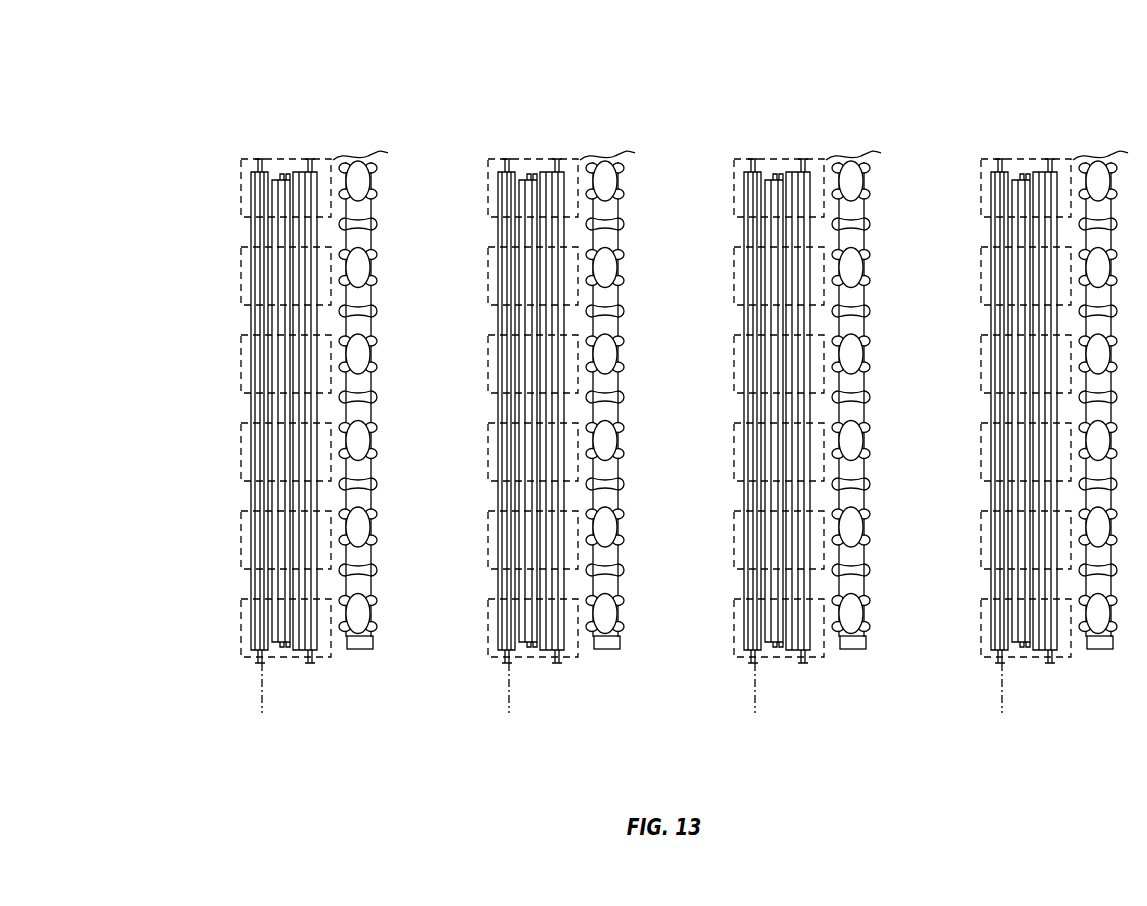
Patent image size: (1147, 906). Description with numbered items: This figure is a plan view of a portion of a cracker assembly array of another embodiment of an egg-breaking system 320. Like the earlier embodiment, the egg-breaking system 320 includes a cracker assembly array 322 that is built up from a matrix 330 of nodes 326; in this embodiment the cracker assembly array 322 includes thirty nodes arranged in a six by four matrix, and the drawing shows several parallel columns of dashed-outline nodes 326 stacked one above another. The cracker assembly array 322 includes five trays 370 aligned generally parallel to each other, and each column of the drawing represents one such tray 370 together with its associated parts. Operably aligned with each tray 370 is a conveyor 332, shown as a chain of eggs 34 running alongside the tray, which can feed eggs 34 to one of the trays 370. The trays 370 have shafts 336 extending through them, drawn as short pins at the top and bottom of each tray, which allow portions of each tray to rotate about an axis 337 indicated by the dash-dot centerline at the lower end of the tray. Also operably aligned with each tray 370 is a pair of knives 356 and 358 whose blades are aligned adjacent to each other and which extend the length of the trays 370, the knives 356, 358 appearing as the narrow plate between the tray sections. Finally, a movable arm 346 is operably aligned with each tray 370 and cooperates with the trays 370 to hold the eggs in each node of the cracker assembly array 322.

The eggs 34 is at (351, 190).
The egg-breaking system 320 is at (397, 90).
The cracker assembly array 322 is at (172, 92).
The nodes 326 is at (260, 188).
The matrix 330 is at (312, 62).
The conveyor 332 is at (360, 650).
The shafts 336 is at (257, 659).
The axis 337 is at (261, 696).
The movable arm 346 is at (281, 176).
The knife 356 is at (282, 649).
The knife 358 is at (288, 649).
The trays 370 is at (303, 137).